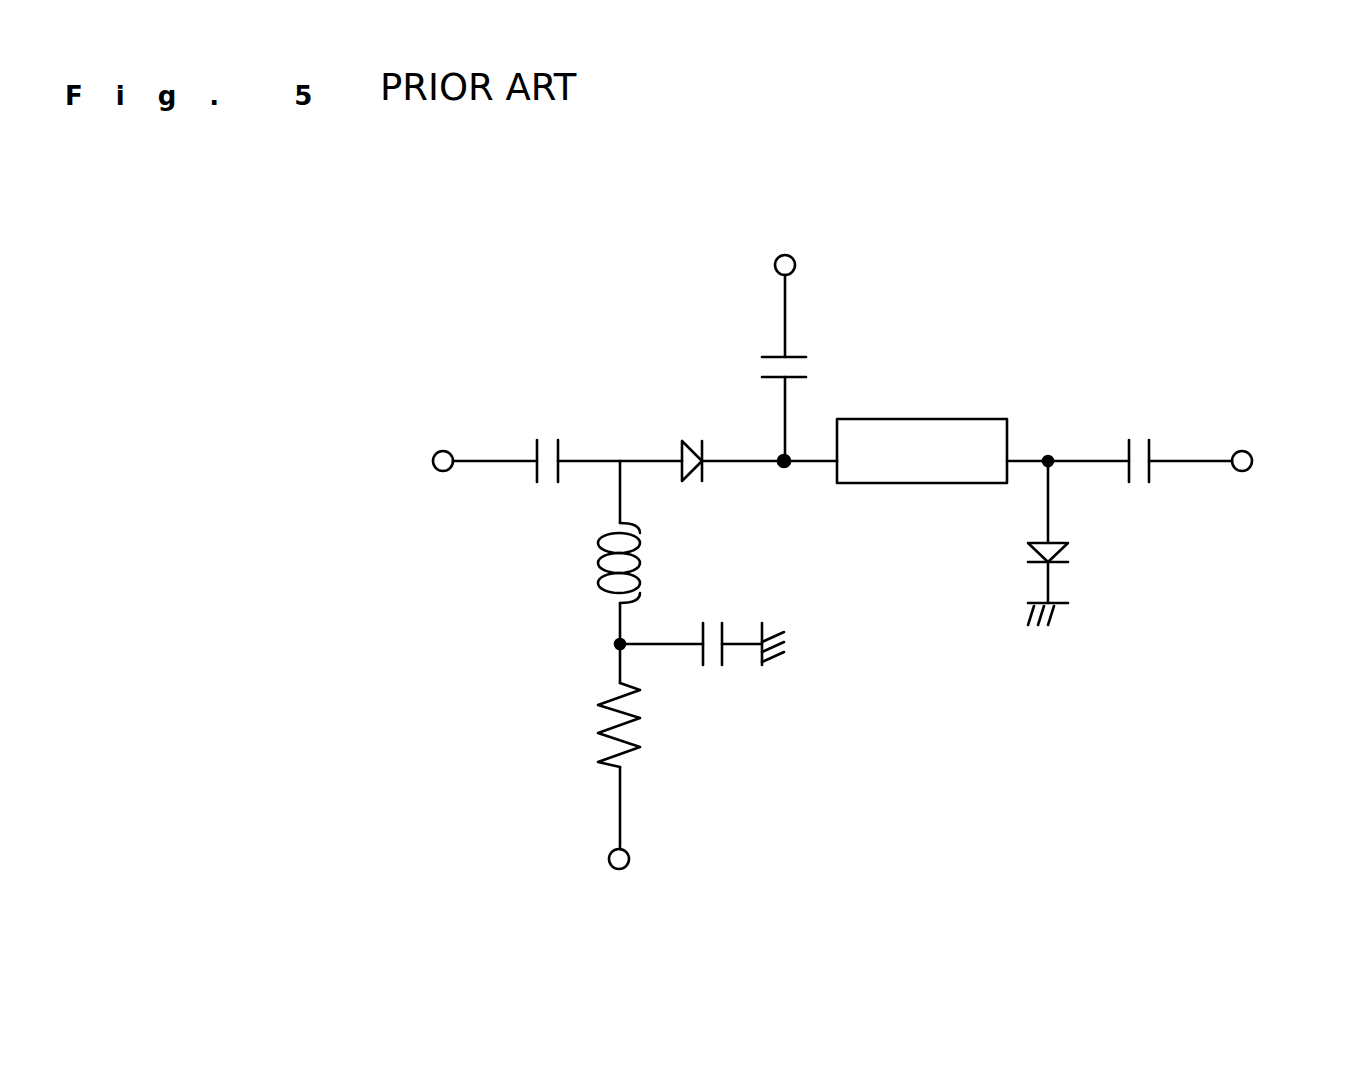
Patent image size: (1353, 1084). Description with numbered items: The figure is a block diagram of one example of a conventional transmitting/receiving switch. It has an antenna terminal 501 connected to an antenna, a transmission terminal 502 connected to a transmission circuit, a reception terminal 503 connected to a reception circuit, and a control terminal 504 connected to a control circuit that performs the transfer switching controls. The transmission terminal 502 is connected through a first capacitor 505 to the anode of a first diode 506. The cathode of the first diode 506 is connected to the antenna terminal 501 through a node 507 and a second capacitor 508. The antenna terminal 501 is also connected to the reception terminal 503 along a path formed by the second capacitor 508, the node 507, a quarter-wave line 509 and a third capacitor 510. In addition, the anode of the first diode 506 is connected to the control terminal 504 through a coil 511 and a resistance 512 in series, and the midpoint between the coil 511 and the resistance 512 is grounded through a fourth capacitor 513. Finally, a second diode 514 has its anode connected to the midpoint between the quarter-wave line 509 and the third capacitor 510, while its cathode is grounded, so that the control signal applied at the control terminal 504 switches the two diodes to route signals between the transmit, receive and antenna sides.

The antenna terminal 501 is at (808, 263).
The transmission terminal 502 is at (442, 438).
The reception terminal 503 is at (1252, 484).
The control terminal 504 is at (596, 857).
The first capacitor 505 is at (546, 426).
The first diode 506 is at (691, 428).
The node 507 is at (786, 475).
The second capacitor 508 is at (814, 366).
The quarter-wave line 509 is at (937, 490).
The third capacitor 510 is at (1140, 416).
The coil 511 is at (585, 573).
The resistance 512 is at (575, 734).
The fourth capacitor 513 is at (724, 675).
The second diode 514 is at (1079, 576).